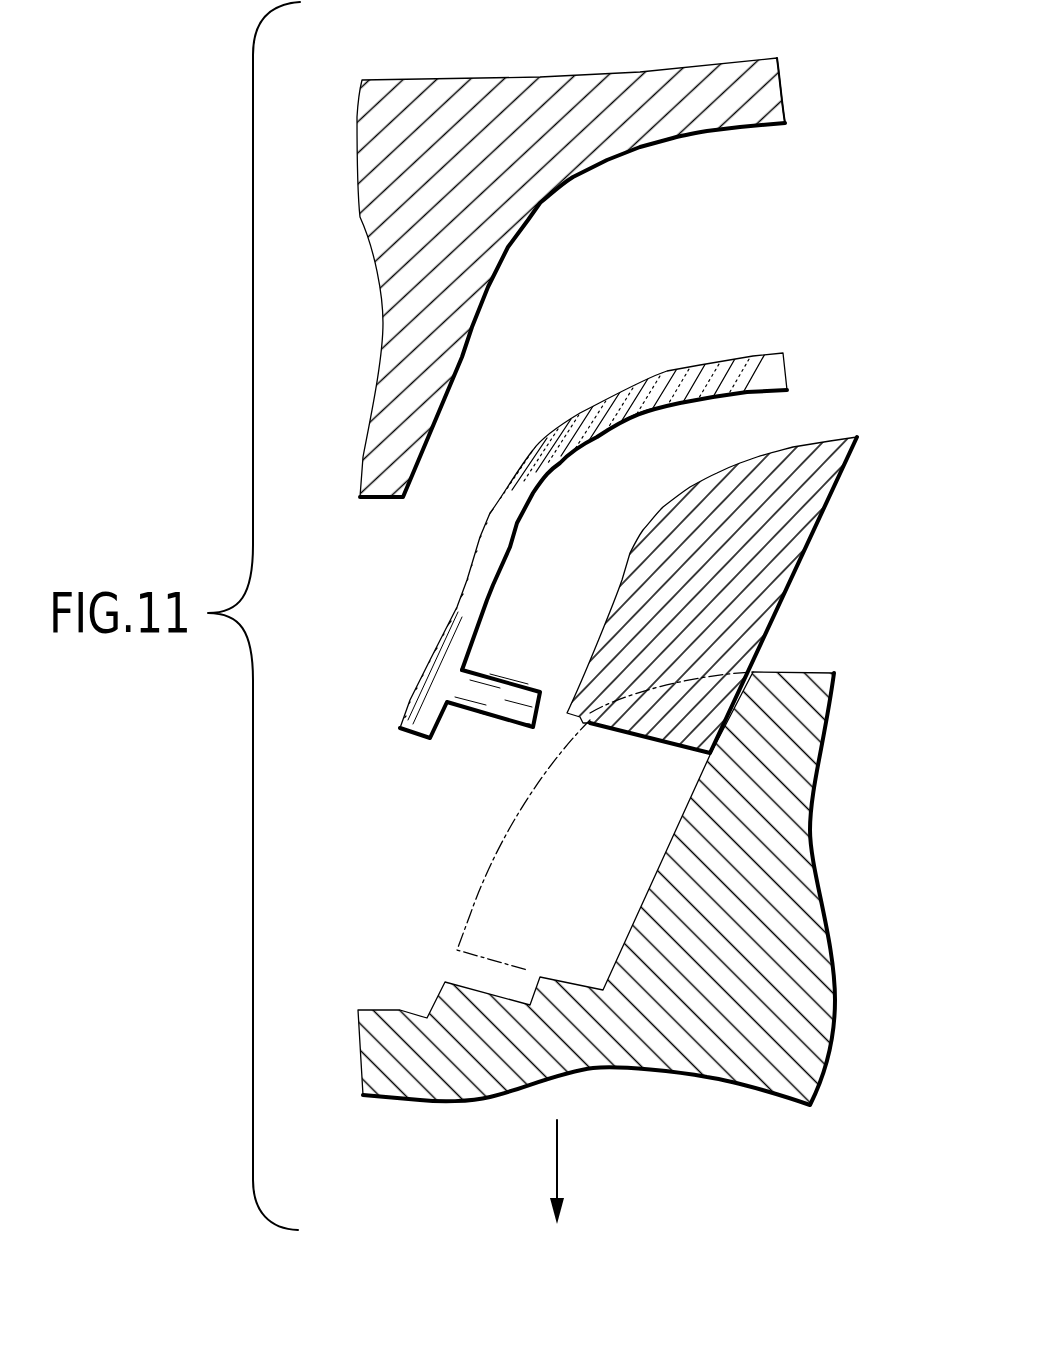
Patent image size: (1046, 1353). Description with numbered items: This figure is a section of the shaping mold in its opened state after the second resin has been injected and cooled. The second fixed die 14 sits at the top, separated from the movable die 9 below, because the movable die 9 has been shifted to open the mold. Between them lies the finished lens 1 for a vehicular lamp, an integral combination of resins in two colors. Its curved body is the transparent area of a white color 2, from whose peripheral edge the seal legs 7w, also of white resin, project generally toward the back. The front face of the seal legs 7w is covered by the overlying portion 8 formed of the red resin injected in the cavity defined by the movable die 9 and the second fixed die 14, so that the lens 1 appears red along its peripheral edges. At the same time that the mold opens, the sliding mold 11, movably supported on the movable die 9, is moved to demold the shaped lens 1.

The second fixed die 14 is at (542, 87).
The lens 1 is at (800, 328).
The transparent area of a white color 2 is at (658, 383).
The seal legs 7w is at (477, 712).
The overlying portion 8 is at (427, 662).
The sliding mold 11 is at (795, 557).
The movable die 9 is at (818, 885).